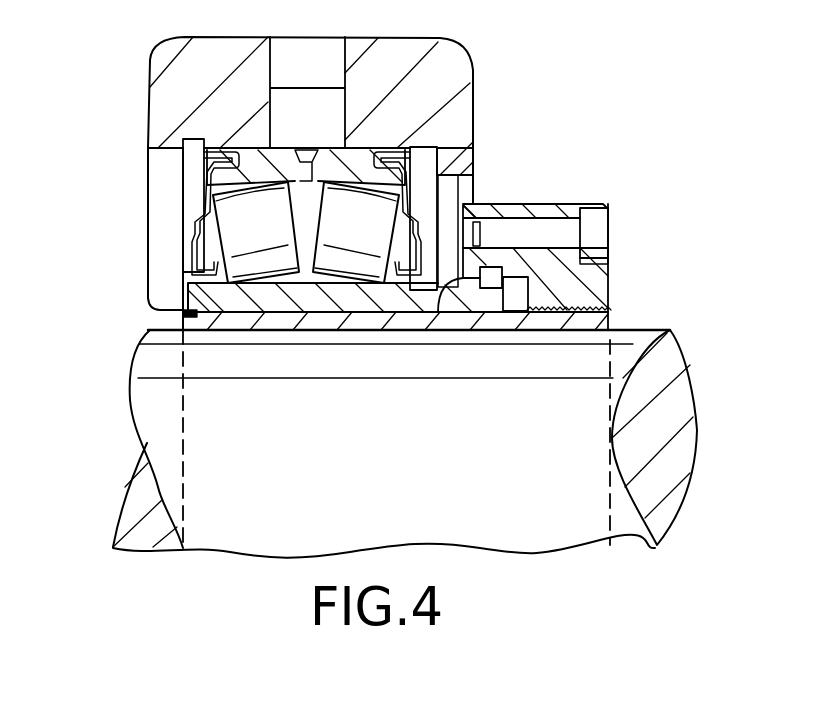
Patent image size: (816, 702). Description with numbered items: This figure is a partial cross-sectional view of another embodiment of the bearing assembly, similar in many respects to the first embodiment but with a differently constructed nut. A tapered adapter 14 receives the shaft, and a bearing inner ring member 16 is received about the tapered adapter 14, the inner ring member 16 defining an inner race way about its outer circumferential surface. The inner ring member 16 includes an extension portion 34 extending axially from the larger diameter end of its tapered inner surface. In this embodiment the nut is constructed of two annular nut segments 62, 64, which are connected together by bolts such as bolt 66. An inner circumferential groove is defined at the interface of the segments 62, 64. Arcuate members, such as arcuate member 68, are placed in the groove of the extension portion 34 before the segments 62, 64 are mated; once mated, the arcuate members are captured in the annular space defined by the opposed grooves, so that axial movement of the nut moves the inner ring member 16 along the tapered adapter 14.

The tapered adapter 14 is at (610, 328).
The bearing inner ring member 16 is at (148, 306).
The extension portion 34 is at (441, 288).
The annular nut segment 62 is at (498, 203).
The annular nut segment 64 is at (572, 203).
The bolt 66 is at (610, 233).
The arcuate member 68 is at (507, 290).